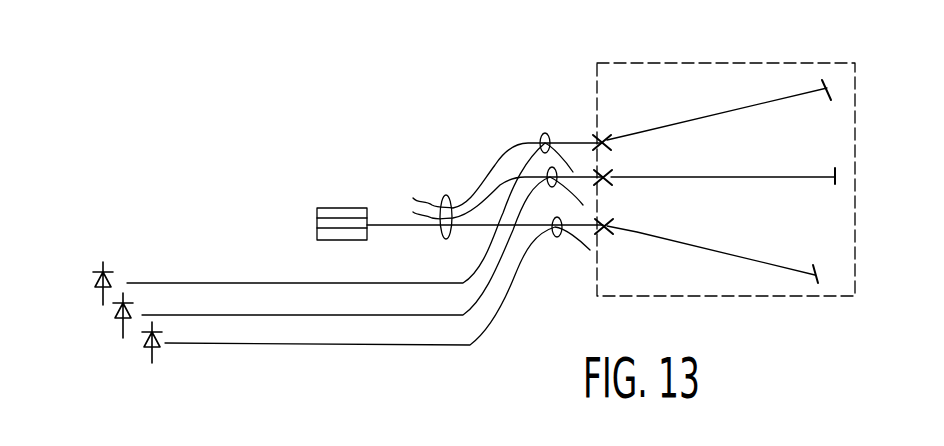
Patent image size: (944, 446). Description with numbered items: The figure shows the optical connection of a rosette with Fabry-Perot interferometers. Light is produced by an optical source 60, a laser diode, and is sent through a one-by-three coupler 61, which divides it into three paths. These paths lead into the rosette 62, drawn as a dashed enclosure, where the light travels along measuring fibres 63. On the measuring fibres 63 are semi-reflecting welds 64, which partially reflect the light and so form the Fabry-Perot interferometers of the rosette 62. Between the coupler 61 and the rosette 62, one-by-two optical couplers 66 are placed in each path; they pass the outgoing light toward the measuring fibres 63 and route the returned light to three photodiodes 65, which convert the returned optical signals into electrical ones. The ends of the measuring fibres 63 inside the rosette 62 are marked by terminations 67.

The optical source 60 is at (350, 208).
The coupler 1×3 61 is at (447, 195).
The rosette 62 is at (740, 297).
The measuring fibres 63 is at (743, 250).
The semi-reflecting welds 64 is at (602, 138).
The photodiodes 65 is at (140, 347).
The optical couplers 1×2 66 is at (543, 155).
The detectors 67 is at (827, 87).